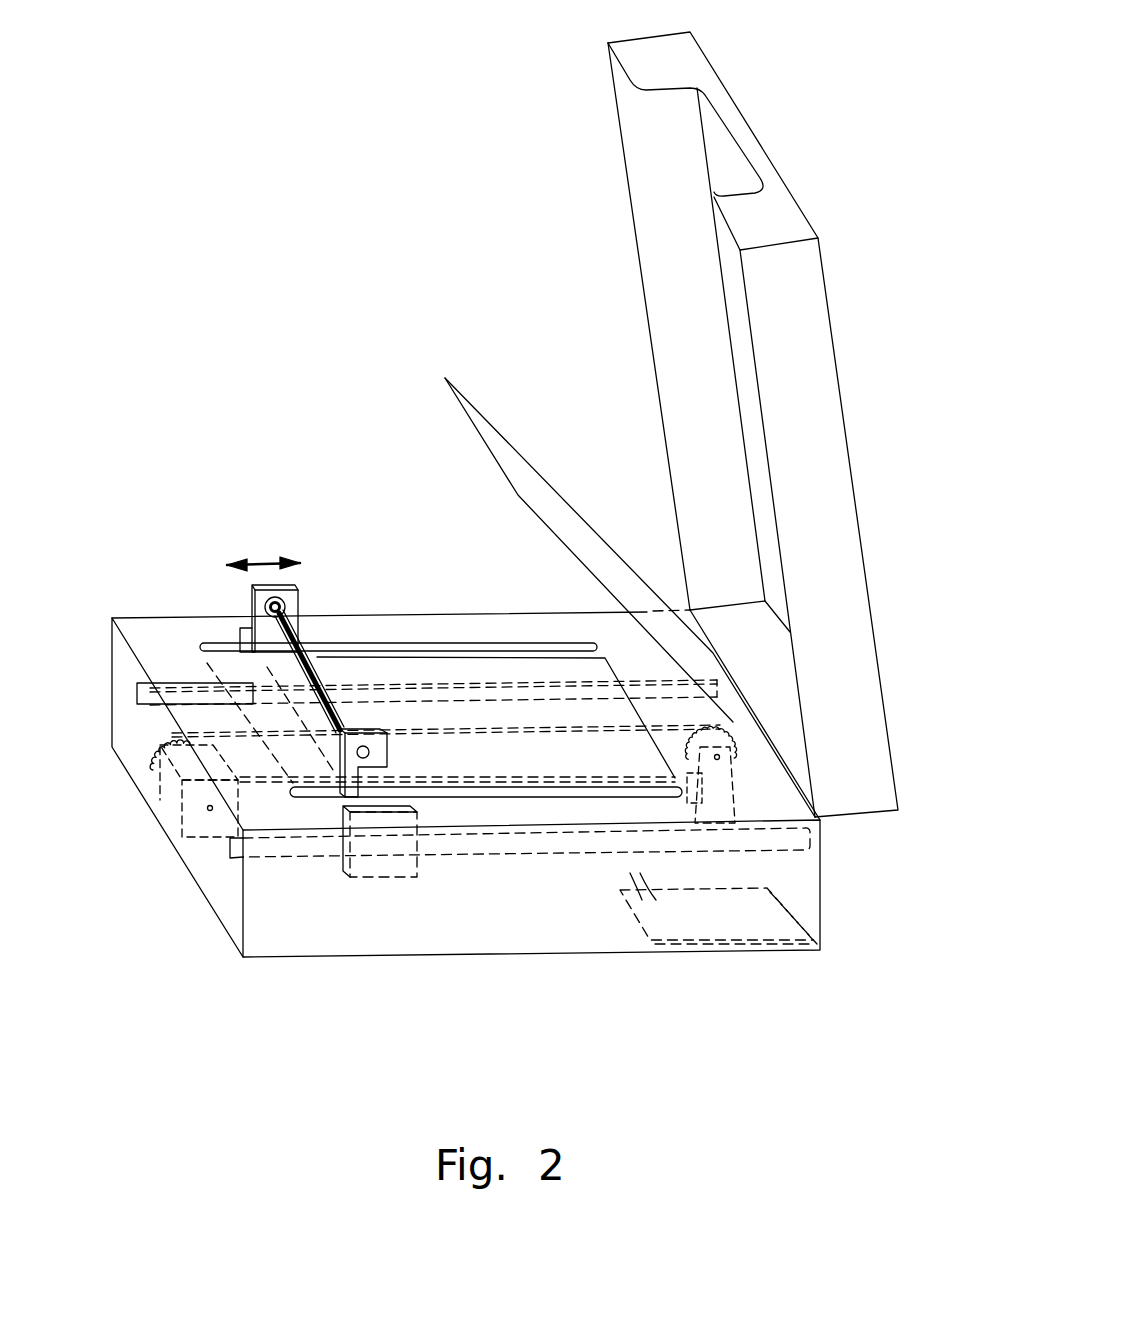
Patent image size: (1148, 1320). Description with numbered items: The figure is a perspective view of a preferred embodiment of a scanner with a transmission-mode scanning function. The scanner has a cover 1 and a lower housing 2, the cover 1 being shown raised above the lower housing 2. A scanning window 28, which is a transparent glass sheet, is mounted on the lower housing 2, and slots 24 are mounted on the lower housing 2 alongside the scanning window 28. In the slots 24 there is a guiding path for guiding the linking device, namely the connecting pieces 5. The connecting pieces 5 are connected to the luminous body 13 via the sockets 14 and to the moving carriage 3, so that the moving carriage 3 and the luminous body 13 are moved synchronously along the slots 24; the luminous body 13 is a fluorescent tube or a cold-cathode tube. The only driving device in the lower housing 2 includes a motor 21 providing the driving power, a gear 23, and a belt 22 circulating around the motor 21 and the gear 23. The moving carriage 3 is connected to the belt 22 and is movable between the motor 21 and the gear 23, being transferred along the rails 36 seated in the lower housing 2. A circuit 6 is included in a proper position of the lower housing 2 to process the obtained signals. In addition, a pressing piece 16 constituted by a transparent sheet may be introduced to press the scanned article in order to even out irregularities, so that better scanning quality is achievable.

The cover 1 is at (813, 442).
The lower housing 2 is at (617, 953).
The moving carriage 3 is at (383, 862).
The connecting pieces 5 is at (250, 602).
The circuit 6 is at (737, 920).
The luminous body 13 is at (313, 650).
The sockets 14 is at (303, 602).
The pressing piece 16 is at (553, 505).
The motor 21 is at (172, 800).
The belt 22 is at (202, 730).
The gear 23 is at (738, 755).
The slots 24 is at (375, 650).
The scanning window 28 is at (497, 717).
The rails 36 is at (172, 683).